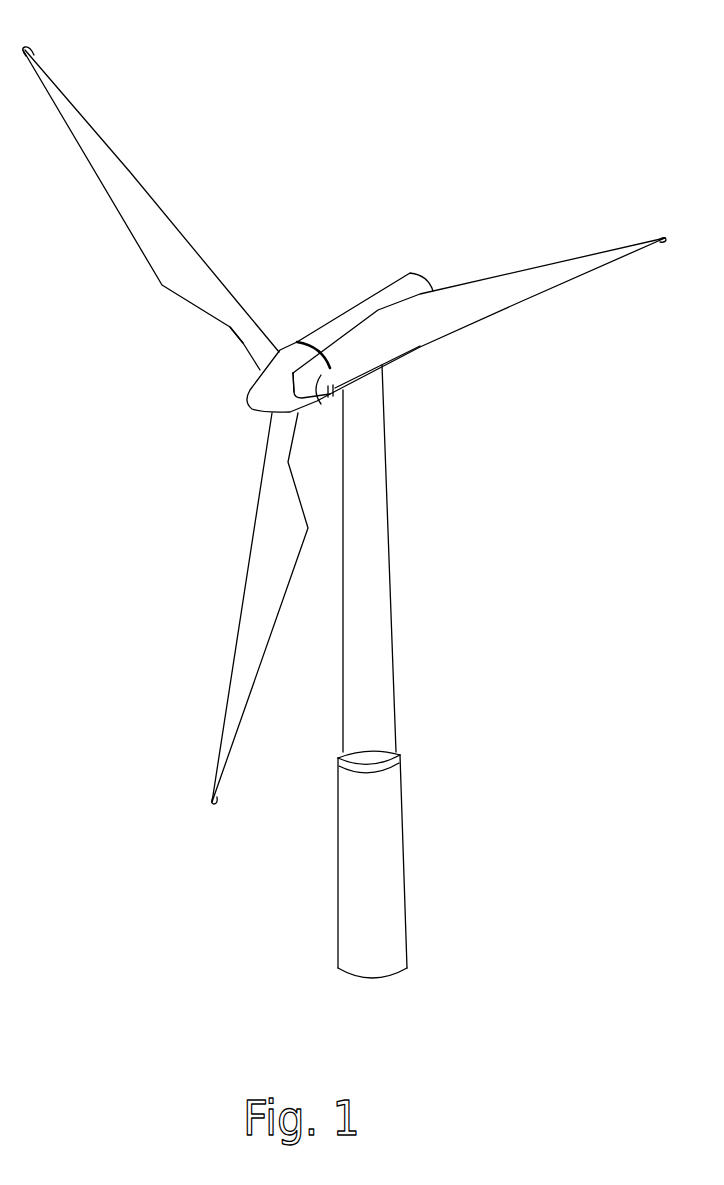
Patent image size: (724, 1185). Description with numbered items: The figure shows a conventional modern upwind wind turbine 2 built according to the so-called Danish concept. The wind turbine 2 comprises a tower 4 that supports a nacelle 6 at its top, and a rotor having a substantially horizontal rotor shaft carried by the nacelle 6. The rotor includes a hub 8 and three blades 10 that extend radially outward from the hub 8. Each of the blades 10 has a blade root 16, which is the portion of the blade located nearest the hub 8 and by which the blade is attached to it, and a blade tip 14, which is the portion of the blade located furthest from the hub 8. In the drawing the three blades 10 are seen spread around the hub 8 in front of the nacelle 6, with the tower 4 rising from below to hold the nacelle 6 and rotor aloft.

The upwind wind turbine 2 is at (486, 663).
The tower 4 is at (375, 582).
The nacelle 6 is at (337, 328).
The hub 8 is at (255, 398).
The blade 10 is at (173, 285).
The blade tip 14 is at (67, 105).
The blade root 16 is at (253, 343).